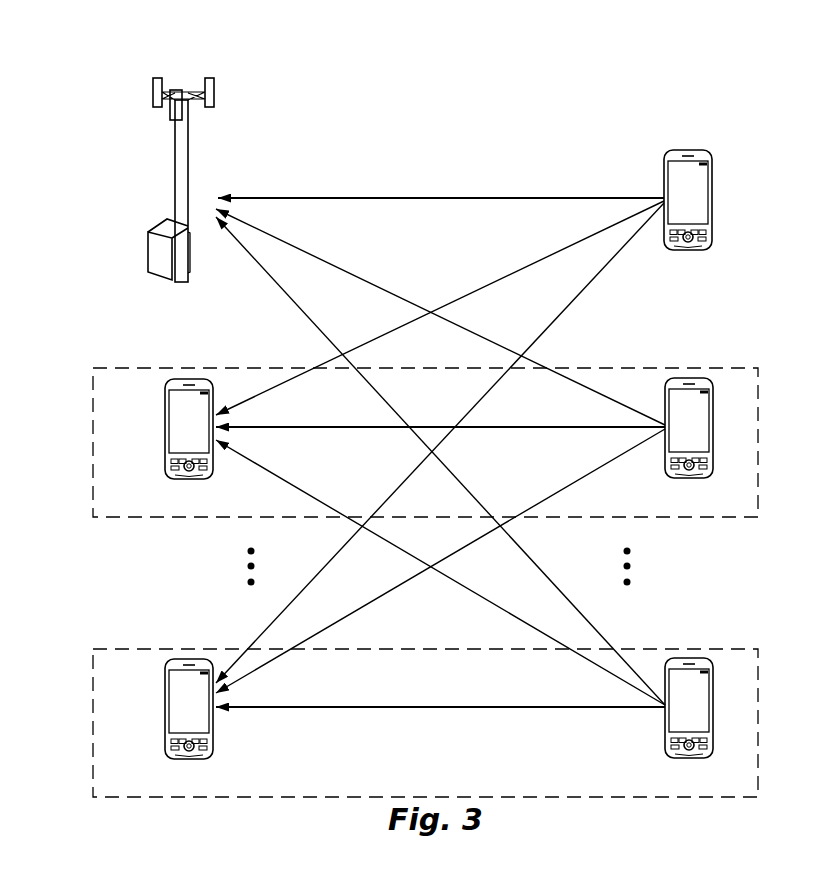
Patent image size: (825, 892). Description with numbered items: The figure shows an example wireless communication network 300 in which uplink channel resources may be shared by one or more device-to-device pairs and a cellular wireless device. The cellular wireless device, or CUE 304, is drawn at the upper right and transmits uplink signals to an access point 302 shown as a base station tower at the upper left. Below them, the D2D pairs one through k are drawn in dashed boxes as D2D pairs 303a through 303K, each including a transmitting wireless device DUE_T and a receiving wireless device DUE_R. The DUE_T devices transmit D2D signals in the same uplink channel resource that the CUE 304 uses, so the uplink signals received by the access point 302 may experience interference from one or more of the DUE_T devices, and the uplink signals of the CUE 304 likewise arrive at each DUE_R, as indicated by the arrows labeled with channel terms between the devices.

The wireless communication network 300 is at (713, 68).
The access point 302 is at (165, 70).
The cellular wireless device (CUE) 304 is at (712, 194).
The D2D pair 303a is at (722, 362).
The D2D pair 303K is at (722, 642).